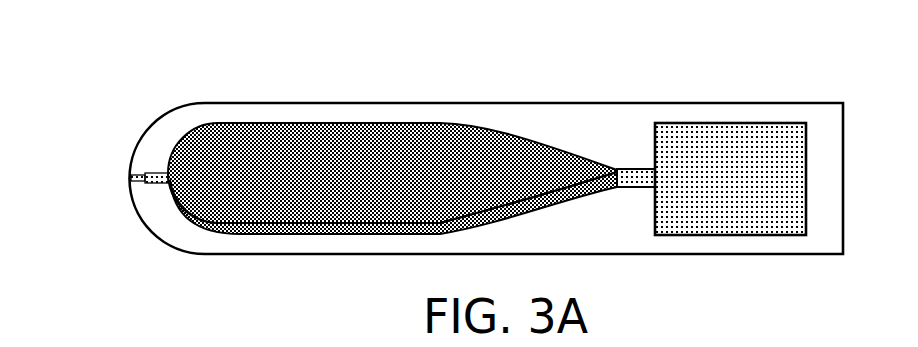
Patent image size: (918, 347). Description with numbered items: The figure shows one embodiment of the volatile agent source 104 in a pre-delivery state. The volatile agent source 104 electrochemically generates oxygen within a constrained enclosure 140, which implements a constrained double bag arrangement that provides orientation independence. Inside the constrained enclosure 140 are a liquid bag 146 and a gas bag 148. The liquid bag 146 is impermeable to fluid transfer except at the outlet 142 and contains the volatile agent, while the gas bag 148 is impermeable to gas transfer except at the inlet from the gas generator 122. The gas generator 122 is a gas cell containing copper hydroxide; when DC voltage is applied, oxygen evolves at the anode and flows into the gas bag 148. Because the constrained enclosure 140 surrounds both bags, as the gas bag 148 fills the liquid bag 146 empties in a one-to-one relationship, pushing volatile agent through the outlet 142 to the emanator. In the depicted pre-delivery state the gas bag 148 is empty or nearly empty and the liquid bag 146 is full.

The volatile agent source 104 is at (240, 100).
The gas generator 122 is at (731, 143).
The constrained enclosure 140 is at (180, 140).
The outlet 142 is at (124, 180).
The liquid bag 146 is at (299, 140).
The gas bag 148 is at (317, 230).